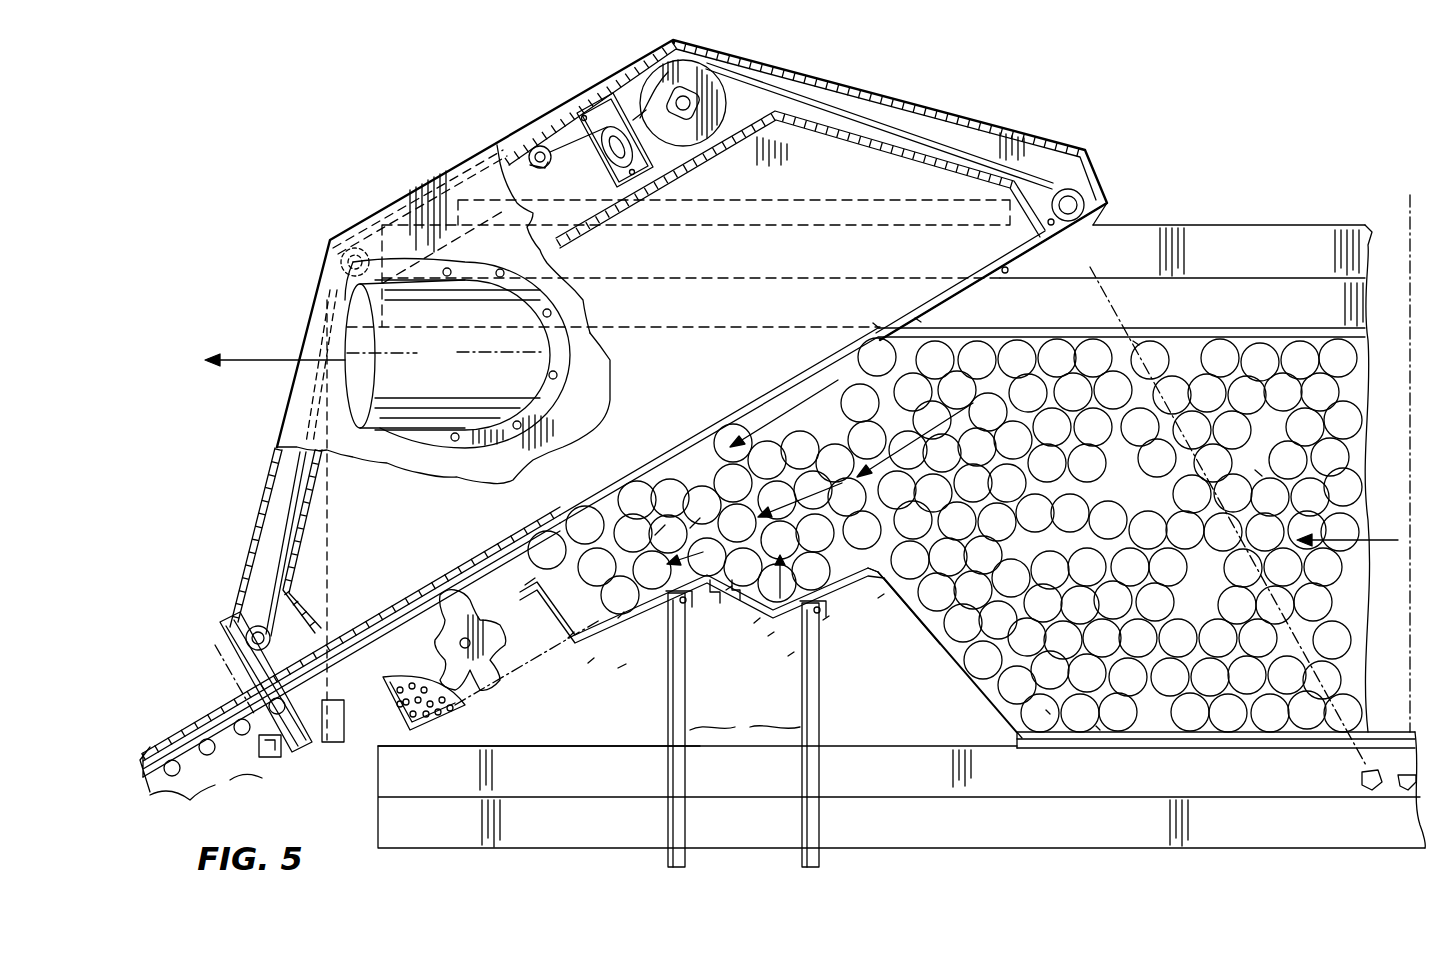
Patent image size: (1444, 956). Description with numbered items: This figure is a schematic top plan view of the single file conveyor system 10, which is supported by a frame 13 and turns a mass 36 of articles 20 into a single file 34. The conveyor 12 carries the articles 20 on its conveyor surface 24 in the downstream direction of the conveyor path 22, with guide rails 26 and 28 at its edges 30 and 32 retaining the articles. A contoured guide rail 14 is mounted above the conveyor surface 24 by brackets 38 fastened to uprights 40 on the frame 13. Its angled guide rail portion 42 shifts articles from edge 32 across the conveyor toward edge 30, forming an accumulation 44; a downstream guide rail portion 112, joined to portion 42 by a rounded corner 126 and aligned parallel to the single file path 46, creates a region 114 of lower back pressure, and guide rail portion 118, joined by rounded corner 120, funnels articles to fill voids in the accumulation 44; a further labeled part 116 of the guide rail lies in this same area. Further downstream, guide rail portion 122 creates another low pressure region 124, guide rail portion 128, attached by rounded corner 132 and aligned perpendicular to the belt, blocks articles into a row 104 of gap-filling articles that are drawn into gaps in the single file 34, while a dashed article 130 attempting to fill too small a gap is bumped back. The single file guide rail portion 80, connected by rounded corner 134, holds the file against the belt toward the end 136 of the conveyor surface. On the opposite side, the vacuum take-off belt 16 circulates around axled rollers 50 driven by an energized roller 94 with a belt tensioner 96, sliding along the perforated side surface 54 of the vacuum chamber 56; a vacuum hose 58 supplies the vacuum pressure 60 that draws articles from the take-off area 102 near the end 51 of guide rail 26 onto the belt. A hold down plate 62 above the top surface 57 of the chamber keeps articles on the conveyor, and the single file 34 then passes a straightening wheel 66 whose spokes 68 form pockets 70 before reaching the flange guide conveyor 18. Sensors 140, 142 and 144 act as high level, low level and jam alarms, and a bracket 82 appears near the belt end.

The single file conveyor system 10 is at (1103, 222).
The conveyor 12 is at (1352, 393).
The frame 13 is at (1108, 263).
The contoured guide rail 14 is at (907, 608).
The vacuum take-off belt 16 is at (892, 110).
The flange guide conveyor 18 is at (148, 760).
The articles 20 is at (1076, 712).
The conveyor path 22 is at (1388, 533).
The conveyor surface 24 is at (616, 704).
The guide rail 26 is at (1135, 343).
The guide rail 28 is at (1098, 728).
The edge 30 is at (1240, 325).
The edge 32 is at (432, 748).
The single file 34 is at (538, 545).
The mass of articles 36 is at (1260, 488).
The brackets 38 is at (745, 728).
The uprights 40 is at (667, 812).
The guide rail portion 42 is at (930, 640).
The accumulation 44 is at (838, 378).
The single file path 46 is at (750, 397).
The axled rollers 50 is at (537, 147).
The end of guide rail 51 is at (917, 320).
The perforated side surface 54 is at (1006, 270).
The vacuum chamber 56 is at (793, 133).
The top surface 57 is at (378, 460).
The vacuum hose 58 is at (420, 374).
The vacuum pressure 60 is at (262, 355).
The hold down plate 62 is at (438, 718).
The straightening wheel 66 is at (497, 624).
The spokes 68 is at (492, 682).
The pockets 70 is at (505, 638).
The single file guide rail portion 80 is at (333, 705).
The cross bracket 82 is at (240, 640).
The energized roller 94 is at (690, 80).
The belt tensioner 96 is at (610, 97).
The take-off area 102 is at (875, 325).
The row of gap-filling articles 104 is at (700, 520).
The guide rail portion 112 is at (825, 622).
The region of lower back pressure 114 is at (790, 658).
The chute wall 116 is at (880, 600).
The guide rail portion 118 is at (756, 625).
The rounded corner 120 is at (770, 638).
The guide rail portion 122 is at (620, 620).
The region of lower back pressure 124 is at (620, 670).
The rounded corner 126 is at (728, 592).
The guide rail portion 128 is at (570, 640).
The dashed article 130 is at (608, 528).
The rounded corner 132 is at (590, 665).
The rounded corner 134 is at (530, 580).
The end of conveyor surface 136 is at (320, 730).
The sensor 140 is at (1405, 788).
The sensor 142 is at (1368, 787).
The sensor 144 is at (262, 740).